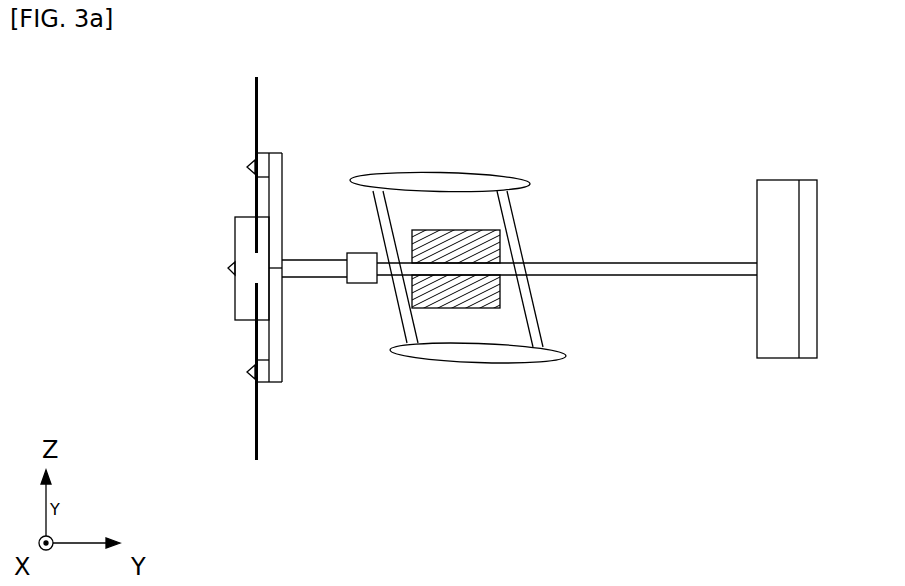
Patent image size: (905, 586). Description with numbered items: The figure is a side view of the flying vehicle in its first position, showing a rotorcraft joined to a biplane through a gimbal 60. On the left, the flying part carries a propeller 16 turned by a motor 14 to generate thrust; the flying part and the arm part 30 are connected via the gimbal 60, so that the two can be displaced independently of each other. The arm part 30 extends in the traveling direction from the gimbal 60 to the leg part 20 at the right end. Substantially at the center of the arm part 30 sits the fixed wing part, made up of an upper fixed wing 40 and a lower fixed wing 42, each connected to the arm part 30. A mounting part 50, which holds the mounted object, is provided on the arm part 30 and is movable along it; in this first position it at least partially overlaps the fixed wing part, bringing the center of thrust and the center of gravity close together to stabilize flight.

The motor 14 is at (248, 163).
The propeller 16 is at (257, 93).
The leg part 20 is at (773, 180).
The arm part 30 is at (570, 262).
The upper fixed wing 40 is at (445, 172).
The lower fixed wing 42 is at (474, 362).
The mounting part 50 is at (500, 298).
The gimbal 60 is at (228, 268).